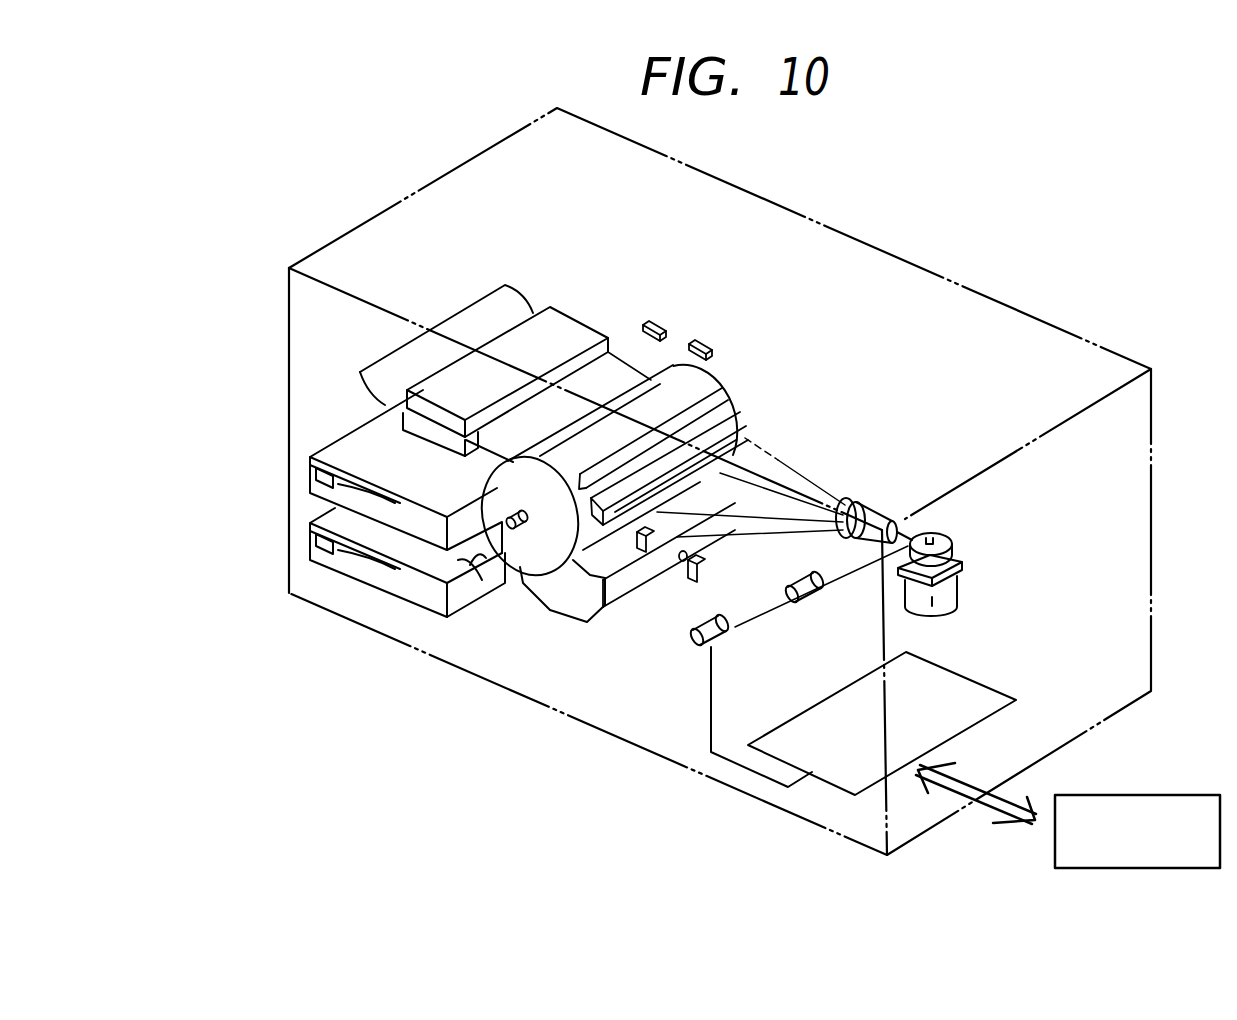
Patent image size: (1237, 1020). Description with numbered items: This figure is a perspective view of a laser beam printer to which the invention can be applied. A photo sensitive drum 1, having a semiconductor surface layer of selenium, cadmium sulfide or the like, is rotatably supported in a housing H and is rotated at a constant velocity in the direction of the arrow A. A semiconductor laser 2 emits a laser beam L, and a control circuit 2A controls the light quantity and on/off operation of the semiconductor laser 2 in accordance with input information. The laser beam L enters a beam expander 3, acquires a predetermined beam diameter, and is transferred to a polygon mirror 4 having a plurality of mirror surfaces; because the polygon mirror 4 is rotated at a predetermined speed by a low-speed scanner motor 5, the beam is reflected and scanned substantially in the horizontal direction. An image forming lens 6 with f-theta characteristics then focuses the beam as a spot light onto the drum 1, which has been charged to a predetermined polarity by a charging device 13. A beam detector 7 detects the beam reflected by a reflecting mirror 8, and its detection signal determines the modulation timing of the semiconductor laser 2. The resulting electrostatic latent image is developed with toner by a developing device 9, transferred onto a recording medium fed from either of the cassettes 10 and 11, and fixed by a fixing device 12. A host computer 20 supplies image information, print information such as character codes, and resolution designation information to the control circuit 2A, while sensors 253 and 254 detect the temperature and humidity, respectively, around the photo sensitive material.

The photo sensitive drum 1 is at (602, 424).
The semiconductor laser 2 is at (720, 638).
The beam expander 3 is at (822, 600).
The polygon mirror 4 is at (952, 533).
The low-speed rotating motor (scanner motor) 5 is at (960, 595).
The image forming lens 6 is at (882, 508).
The beam detector 7 is at (690, 578).
The reflecting mirror 8 is at (636, 552).
The developing device 9 is at (540, 588).
The cassette 10 is at (348, 493).
The cassette 11 is at (367, 578).
The fixing device 12 is at (385, 410).
The charging device 13 is at (725, 390).
The host computer 20 is at (1160, 795).
The sensor 253 is at (652, 323).
The sensor 254 is at (708, 343).
The control circuit 2A is at (1000, 692).
The arrow A is at (511, 502).
The housing H is at (828, 228).
The laser beam L is at (762, 618).